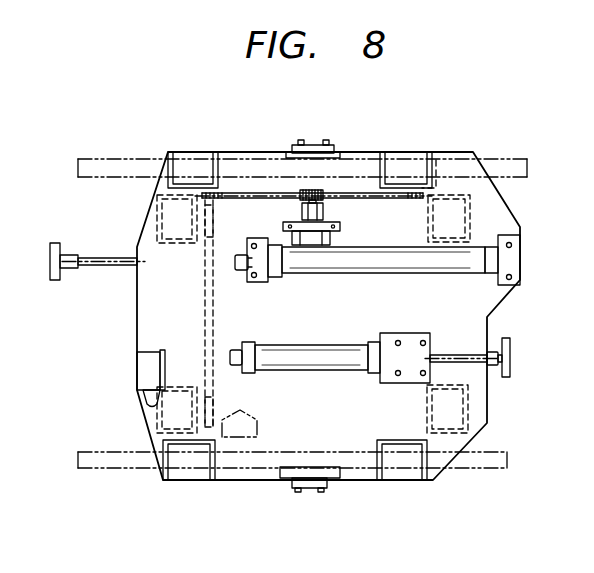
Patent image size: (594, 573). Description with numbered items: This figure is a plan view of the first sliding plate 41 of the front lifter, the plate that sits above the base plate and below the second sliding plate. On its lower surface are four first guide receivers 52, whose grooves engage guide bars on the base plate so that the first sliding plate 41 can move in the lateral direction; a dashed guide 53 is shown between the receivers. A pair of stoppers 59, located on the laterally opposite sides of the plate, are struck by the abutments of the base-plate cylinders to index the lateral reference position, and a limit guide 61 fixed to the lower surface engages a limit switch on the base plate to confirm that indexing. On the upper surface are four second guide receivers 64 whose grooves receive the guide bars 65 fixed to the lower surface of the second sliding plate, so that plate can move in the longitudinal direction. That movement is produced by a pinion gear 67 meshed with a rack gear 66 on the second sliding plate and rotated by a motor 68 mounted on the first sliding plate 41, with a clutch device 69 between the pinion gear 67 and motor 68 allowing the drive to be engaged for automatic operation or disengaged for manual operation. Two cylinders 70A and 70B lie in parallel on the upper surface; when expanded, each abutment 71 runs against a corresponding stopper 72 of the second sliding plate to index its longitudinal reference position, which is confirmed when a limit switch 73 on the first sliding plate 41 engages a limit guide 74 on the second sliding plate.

The first sliding plate 41 is at (497, 320).
The first guide receivers 52 is at (157, 213).
The guide rail 53 is at (205, 311).
The stoppers 59 is at (306, 146).
The limit guide 61 is at (421, 180).
The second guide receivers 64 is at (190, 165).
The guide bars 65 is at (507, 163).
The rack gear 66 is at (346, 194).
The pinion gear 67 is at (300, 198).
The motor 68 is at (312, 241).
The clutch device 69 is at (325, 210).
The cylinder 70A is at (386, 263).
The cylinder 70B is at (313, 365).
The abutment 71 is at (90, 266).
The stoppers 72 is at (55, 243).
The limit switch 73 is at (140, 363).
The limit guide 74 is at (250, 437).